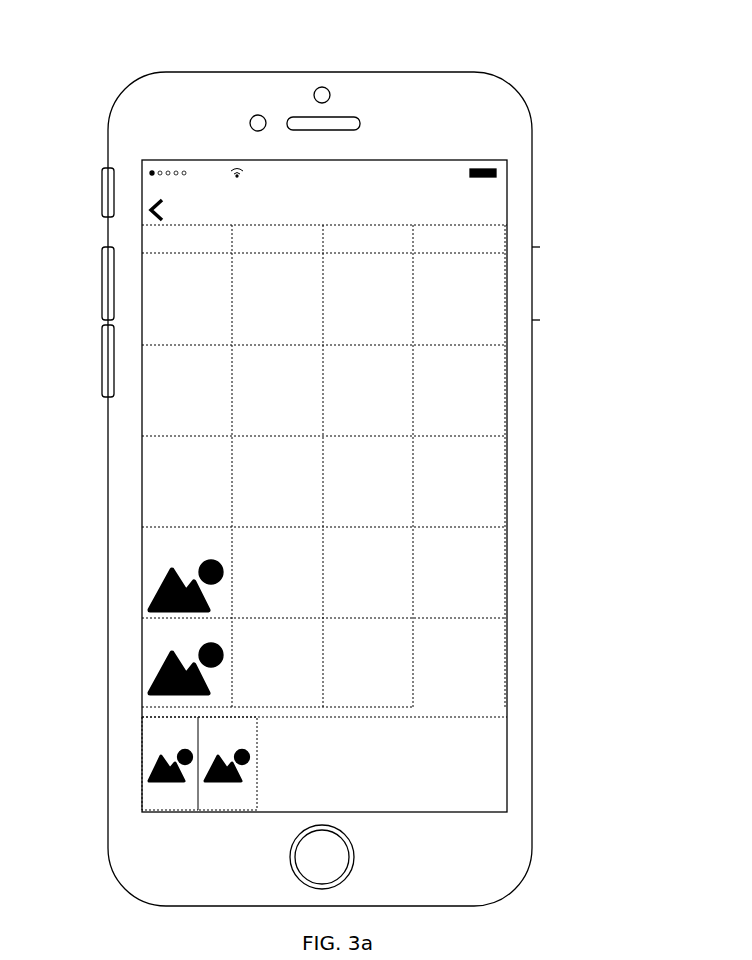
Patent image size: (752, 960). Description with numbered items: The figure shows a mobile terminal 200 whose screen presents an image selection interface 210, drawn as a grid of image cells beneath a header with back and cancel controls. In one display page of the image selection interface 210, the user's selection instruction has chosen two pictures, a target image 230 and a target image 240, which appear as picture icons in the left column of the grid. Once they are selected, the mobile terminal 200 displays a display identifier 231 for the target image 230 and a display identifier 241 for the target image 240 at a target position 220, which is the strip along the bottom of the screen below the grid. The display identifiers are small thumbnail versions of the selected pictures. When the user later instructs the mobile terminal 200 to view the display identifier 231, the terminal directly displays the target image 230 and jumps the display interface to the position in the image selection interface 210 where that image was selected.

The mobile terminal 200 is at (323, 60).
The image selection interface 210 is at (467, 667).
The target position 220 is at (467, 777).
The target image 230 is at (180, 628).
The target image 240 is at (163, 535).
The display identifier 231 is at (168, 735).
The display identifier 241 is at (222, 795).